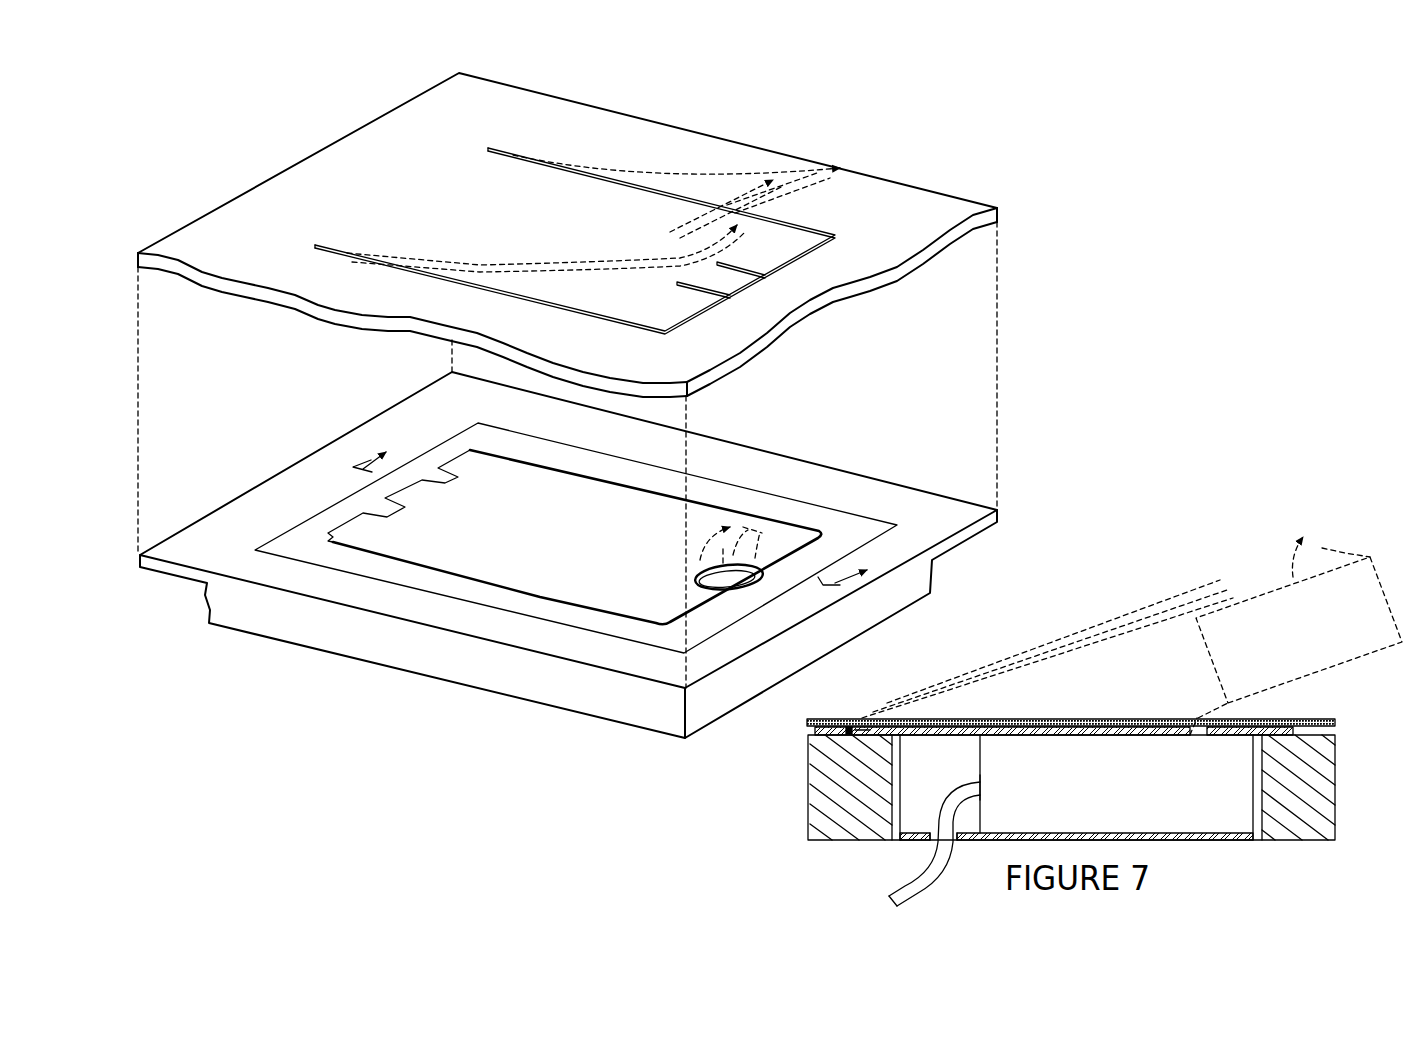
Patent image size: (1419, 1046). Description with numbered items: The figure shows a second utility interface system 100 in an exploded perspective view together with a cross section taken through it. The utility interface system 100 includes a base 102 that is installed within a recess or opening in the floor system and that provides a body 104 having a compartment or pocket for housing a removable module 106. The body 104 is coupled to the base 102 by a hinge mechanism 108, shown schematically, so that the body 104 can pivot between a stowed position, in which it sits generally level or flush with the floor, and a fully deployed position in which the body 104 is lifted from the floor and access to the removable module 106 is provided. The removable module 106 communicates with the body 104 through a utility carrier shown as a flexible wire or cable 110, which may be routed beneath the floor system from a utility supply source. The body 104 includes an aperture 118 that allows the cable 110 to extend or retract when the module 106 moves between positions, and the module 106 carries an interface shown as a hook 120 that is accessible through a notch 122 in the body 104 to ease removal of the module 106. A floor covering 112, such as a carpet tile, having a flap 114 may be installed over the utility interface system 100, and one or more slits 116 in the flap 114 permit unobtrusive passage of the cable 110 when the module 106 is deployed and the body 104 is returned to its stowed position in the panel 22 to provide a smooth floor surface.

In FIG. 6, the utility interface system 100 is at (1044, 213).
In FIG. 6, the floor covering 112 is at (940, 208).
In FIG. 7, the floor covering 112 is at (820, 722).
In FIG. 6, the flap 114 is at (798, 232).
In FIG. 7, the flap 114 is at (1023, 657).
In FIG. 6, the slits 116 is at (733, 260).
In FIG. 6, the base 102 is at (850, 528).
In FIG. 7, the base 102 is at (833, 720).
In FIG. 6, the panel 22 is at (930, 510).
In FIG. 6, the body 104 is at (703, 507).
In FIG. 7, the body 104 is at (918, 738).
In FIG. 6, the hinge mechanism 108 is at (468, 452).
In FIG. 7, the hinge mechanism 108 is at (863, 725).
In FIG. 6, the hook 120 is at (765, 518).
In FIG. 7, the hook 120 is at (1226, 728).
In FIG. 6, the notch 122 is at (697, 578).
In FIG. 7, the removable module 106 is at (978, 782).
In FIG. 7, the aperture 118 is at (950, 845).
In FIG. 7, the cable 110 is at (915, 890).